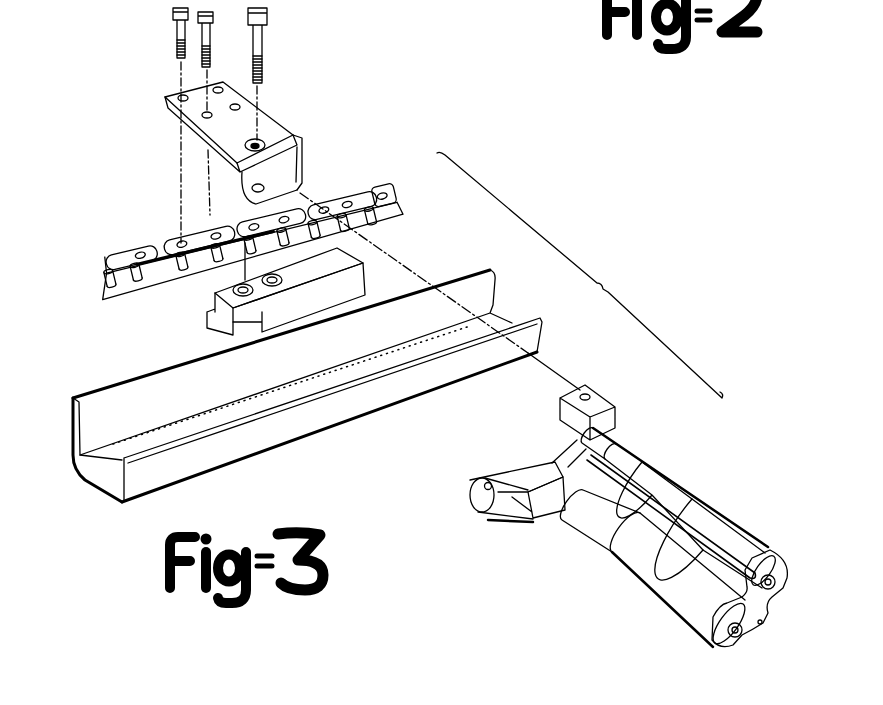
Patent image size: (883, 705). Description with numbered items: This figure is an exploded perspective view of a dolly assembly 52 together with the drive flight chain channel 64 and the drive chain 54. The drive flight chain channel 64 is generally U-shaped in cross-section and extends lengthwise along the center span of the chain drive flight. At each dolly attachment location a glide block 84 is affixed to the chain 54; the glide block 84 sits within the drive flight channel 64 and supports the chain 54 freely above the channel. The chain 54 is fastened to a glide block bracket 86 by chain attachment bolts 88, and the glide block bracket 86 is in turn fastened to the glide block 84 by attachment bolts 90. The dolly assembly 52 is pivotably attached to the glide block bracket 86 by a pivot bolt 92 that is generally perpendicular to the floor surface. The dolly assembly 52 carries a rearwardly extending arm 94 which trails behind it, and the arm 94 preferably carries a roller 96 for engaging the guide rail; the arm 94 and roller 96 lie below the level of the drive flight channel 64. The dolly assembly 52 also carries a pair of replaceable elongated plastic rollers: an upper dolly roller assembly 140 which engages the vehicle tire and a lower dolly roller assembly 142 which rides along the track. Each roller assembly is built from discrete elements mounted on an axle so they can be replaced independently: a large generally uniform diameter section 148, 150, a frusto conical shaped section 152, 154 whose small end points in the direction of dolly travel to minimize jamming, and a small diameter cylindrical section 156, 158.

The dolly assembly 52 is at (657, 522).
The chain 54 is at (127, 250).
The drive flight chain channel 64 is at (72, 406).
The glide block 84 is at (207, 322).
The glide block bracket 86 is at (290, 126).
The chain attachment bolts 88 is at (173, 22).
The attachment bolts 90 is at (198, 57).
The pivot bolt 92 is at (262, 42).
The arm 94 is at (552, 522).
The roller 96 is at (473, 493).
The upper dolly roller assembly 140 is at (765, 545).
The lower dolly roller assembly 142 is at (620, 562).
The large generally uniform diameter section 148 is at (717, 527).
The large generally uniform diameter section 150 is at (688, 587).
The frusto conical shaped section 152 is at (648, 467).
The frusto conical shaped section 154 is at (588, 487).
The small diameter cylindrical section 156 is at (612, 442).
The small diameter cylindrical section 158 is at (577, 493).